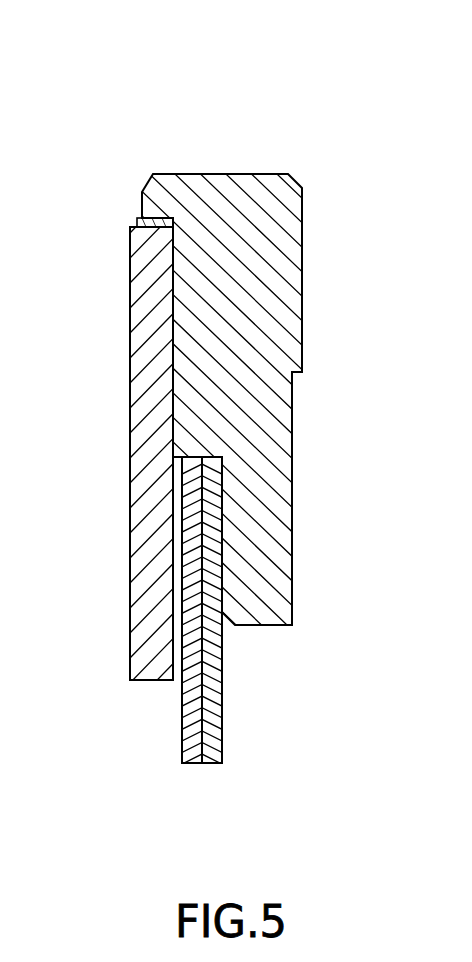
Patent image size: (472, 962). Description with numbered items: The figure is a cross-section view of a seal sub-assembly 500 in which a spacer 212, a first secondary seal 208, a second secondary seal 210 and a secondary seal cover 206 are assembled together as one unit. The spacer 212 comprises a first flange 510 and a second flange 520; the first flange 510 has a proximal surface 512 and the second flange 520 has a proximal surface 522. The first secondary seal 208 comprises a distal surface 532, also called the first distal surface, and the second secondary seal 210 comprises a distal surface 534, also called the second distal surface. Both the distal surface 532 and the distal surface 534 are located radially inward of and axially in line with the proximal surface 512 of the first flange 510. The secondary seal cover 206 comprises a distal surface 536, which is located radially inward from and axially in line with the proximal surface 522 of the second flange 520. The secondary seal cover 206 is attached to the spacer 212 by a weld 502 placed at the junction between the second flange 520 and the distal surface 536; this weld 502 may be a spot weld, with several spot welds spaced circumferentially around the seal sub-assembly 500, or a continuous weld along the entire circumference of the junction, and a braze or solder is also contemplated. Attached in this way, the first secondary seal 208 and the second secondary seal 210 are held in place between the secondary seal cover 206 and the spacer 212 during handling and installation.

The seal sub-assembly 500 is at (355, 82).
The distal surface 536 is at (145, 215).
The second flange 520 is at (128, 201).
The weld 502 is at (145, 220).
The proximal surface 522 is at (160, 222).
The distal surface 532 is at (207, 456).
The distal surface 534 is at (188, 457).
The spacer 212 is at (292, 422).
The secondary seal cover 206 is at (130, 457).
The proximal surface 512 is at (209, 460).
The first flange 510 is at (164, 473).
The second secondary seal 210 is at (182, 720).
The first secondary seal 208 is at (222, 738).